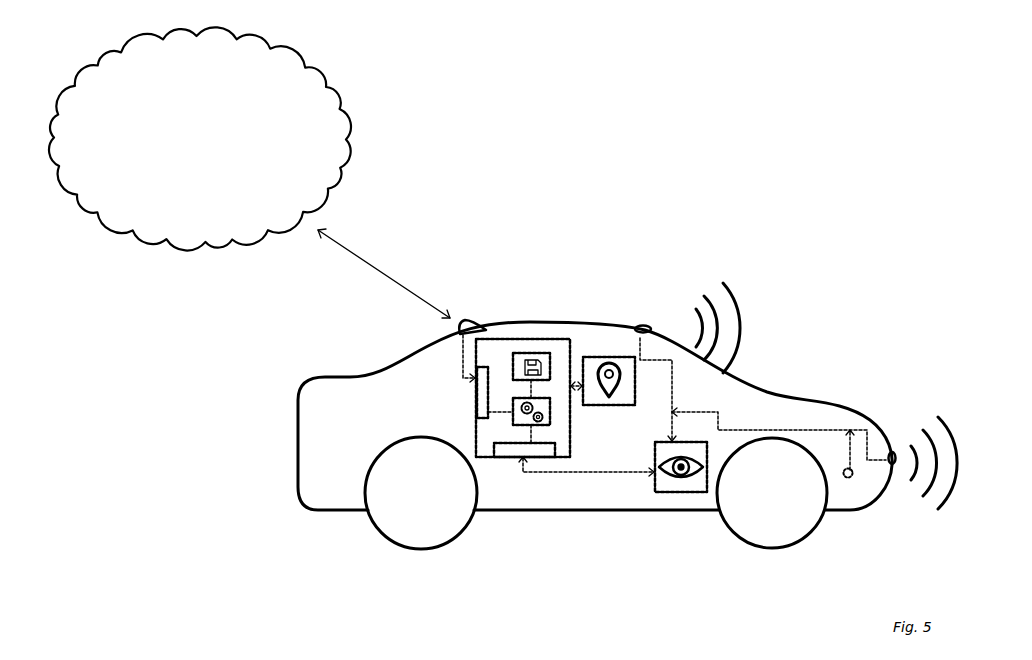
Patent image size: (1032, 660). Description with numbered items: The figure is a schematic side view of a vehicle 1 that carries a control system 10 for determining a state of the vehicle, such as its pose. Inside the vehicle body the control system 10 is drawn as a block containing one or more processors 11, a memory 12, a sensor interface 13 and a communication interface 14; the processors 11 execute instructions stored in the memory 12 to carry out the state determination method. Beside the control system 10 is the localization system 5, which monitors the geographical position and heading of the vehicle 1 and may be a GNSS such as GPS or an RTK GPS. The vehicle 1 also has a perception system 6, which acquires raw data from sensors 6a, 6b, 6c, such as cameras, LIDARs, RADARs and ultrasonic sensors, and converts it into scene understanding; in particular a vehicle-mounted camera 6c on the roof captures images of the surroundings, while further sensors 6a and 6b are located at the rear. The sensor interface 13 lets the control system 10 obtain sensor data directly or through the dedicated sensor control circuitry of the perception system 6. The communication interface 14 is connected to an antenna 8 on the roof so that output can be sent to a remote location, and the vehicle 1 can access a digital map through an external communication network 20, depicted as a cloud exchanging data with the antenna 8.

The vehicle 1 is at (312, 511).
The localization system 5 is at (597, 356).
The perception system 6 is at (688, 493).
The sensor 6a is at (851, 479).
The sensor 6b is at (893, 455).
The vehicle-mounted camera 6c is at (643, 325).
The antenna 8 is at (468, 322).
The control system 10 is at (514, 376).
The processor 11 is at (552, 413).
The memory 12 is at (531, 352).
The sensor interface 13 is at (513, 457).
The communication interface 14 is at (482, 400).
The external communication network 20 is at (304, 52).